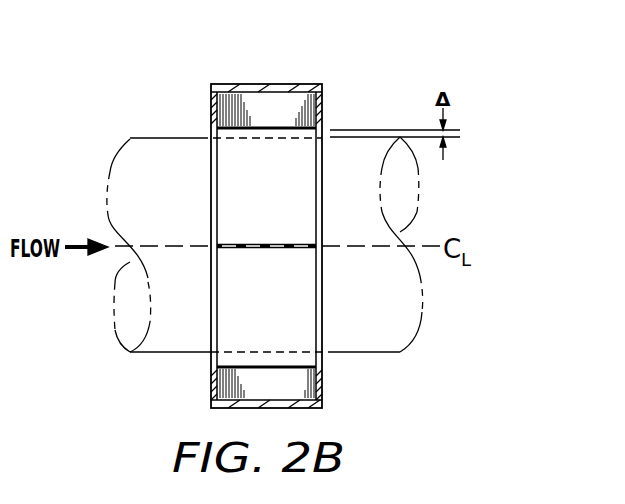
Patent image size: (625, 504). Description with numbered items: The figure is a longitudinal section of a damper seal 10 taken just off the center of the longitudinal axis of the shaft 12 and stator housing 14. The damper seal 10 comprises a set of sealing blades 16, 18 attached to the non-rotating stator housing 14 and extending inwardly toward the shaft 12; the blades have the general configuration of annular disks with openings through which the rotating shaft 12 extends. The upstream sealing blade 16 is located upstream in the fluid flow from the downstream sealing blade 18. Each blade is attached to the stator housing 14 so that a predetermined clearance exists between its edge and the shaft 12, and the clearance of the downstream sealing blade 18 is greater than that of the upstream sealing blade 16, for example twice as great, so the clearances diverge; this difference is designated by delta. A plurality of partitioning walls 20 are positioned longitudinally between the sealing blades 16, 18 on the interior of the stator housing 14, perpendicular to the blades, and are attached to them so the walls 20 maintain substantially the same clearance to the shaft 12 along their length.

The damper seal 10 is at (267, 219).
The shaft 12 is at (150, 138).
The stator housing 14 is at (292, 84).
The upstream sealing blade 16 is at (212, 105).
The downstream sealing blade 18 is at (322, 112).
The partitioning walls 20 is at (278, 120).